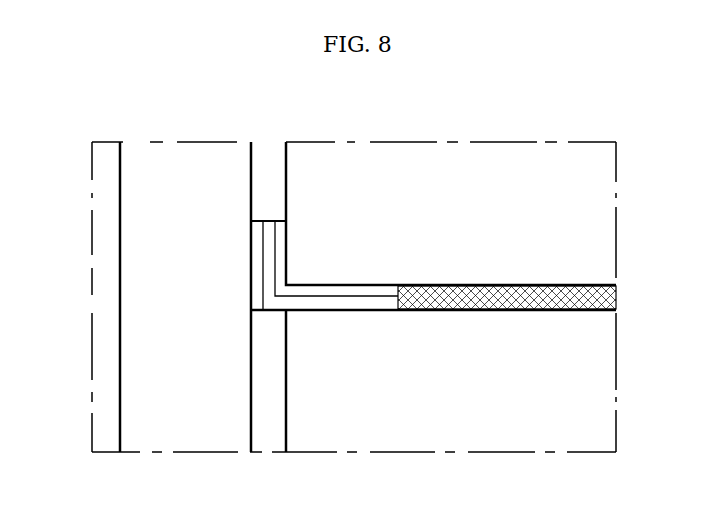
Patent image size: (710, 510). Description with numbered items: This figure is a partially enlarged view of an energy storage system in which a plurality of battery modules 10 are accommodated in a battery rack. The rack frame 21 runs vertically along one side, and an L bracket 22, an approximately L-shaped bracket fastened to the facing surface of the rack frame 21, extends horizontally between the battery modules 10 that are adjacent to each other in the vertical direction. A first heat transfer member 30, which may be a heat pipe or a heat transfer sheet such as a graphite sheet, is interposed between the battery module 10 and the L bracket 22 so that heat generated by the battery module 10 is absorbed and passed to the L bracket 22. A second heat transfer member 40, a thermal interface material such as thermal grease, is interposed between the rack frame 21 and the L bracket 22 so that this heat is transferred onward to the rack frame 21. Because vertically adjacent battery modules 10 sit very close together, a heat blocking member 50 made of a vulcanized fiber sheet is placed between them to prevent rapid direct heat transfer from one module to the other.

The battery module 10 is at (583, 209).
The rack frame 21 is at (133, 283).
The L bracket 22 is at (268, 228).
The first heat transfer member 30 is at (280, 228).
The second heat transfer member 40 is at (256, 228).
The heat blocking member 50 is at (583, 299).